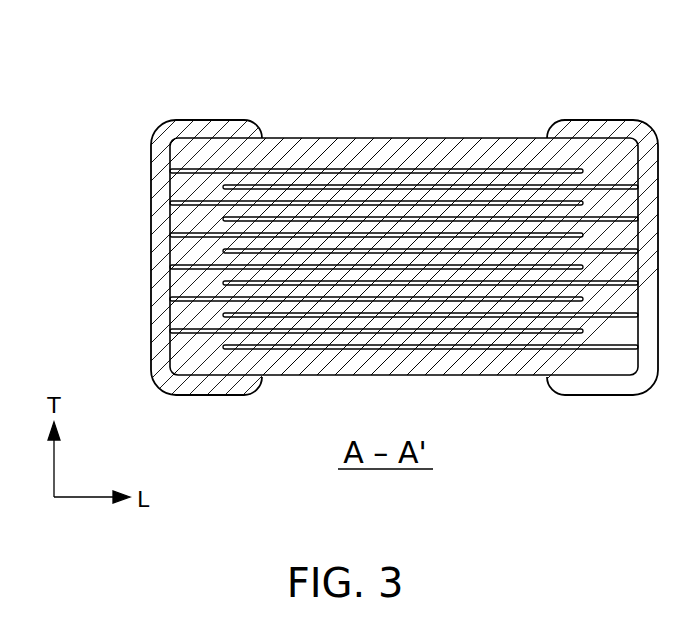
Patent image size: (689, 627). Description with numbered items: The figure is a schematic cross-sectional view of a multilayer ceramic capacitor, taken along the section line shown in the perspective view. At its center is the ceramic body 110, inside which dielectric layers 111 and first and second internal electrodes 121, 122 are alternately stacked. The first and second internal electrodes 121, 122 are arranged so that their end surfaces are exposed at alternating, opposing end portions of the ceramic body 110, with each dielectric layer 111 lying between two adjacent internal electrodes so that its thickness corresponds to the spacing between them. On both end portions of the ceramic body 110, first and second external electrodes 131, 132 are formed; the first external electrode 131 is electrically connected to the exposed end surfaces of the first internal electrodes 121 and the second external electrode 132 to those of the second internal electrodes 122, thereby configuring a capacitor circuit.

The ceramic body 110 is at (407, 137).
The dielectric layer 111 is at (177, 186).
The first internal electrode 121 is at (210, 170).
The second internal electrode 122 is at (227, 193).
The first external electrode 131 is at (207, 120).
The second external electrode 132 is at (603, 120).